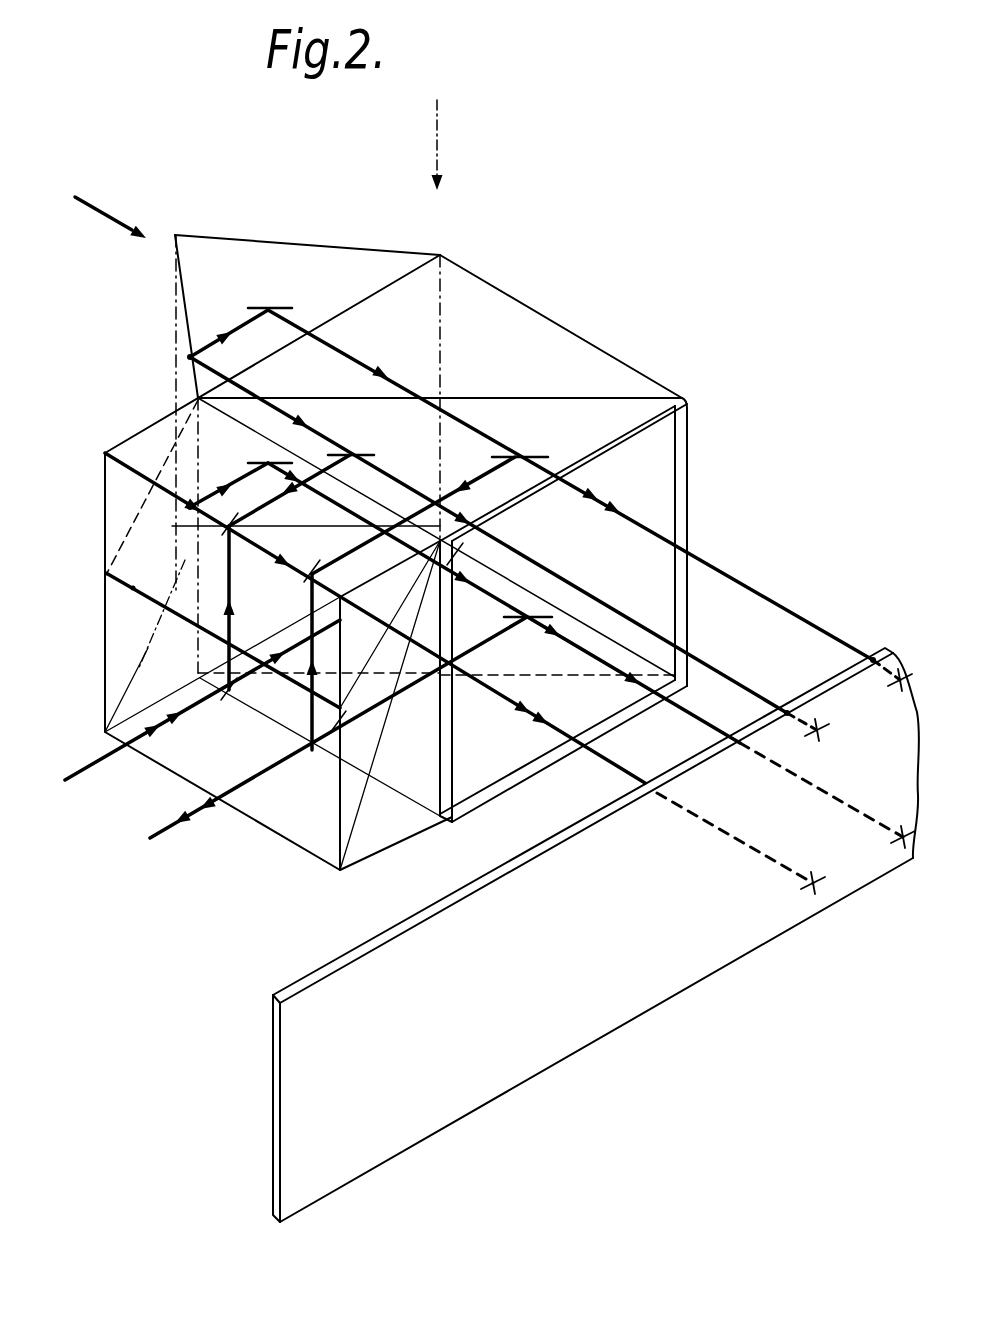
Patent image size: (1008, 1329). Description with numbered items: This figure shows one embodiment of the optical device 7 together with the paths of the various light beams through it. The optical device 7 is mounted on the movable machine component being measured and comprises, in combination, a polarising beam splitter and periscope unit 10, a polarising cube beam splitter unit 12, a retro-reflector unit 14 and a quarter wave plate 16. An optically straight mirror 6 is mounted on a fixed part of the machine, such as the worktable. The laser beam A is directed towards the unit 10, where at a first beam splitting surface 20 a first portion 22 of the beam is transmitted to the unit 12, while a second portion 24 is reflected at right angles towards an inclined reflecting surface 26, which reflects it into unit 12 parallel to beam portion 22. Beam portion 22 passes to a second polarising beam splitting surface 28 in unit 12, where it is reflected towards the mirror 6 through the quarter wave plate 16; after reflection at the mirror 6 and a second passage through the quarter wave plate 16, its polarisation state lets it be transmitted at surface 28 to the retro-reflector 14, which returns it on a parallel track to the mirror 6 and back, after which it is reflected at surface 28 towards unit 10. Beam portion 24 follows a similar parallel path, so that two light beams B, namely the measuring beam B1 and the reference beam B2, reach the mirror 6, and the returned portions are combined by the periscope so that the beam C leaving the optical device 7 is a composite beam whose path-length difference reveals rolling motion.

The mirror 6 is at (626, 1012).
The optical device 7 is at (523, 295).
The polarising beam splitter and periscope unit 10 is at (320, 860).
The polarising cube beam splitter unit 12 is at (685, 398).
The retro-reflector unit 14 is at (303, 233).
The quarter wave plate 16 is at (690, 515).
The first beam splitting surface 20 is at (370, 832).
The first portion of the beam 22 is at (270, 668).
The second portion of the beam 24 is at (228, 650).
The inclined reflecting surface 26 is at (138, 547).
The second polarising beam splitting surface 28 is at (600, 398).
The laser beam A is at (94, 766).
The light beams B is at (112, 212).
The composite beam C is at (152, 838).
The measuring beam B1 is at (738, 679).
The reference beam B2 is at (616, 774).